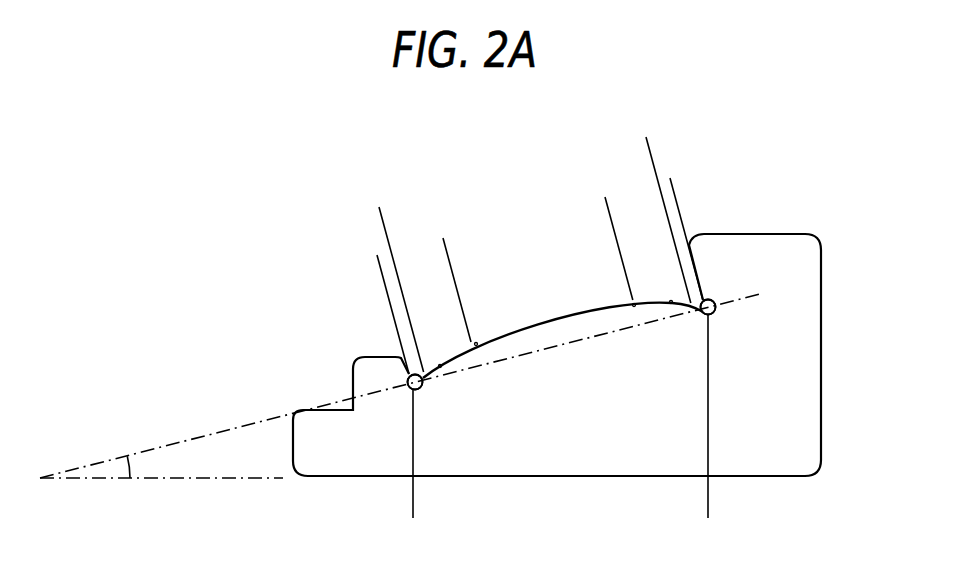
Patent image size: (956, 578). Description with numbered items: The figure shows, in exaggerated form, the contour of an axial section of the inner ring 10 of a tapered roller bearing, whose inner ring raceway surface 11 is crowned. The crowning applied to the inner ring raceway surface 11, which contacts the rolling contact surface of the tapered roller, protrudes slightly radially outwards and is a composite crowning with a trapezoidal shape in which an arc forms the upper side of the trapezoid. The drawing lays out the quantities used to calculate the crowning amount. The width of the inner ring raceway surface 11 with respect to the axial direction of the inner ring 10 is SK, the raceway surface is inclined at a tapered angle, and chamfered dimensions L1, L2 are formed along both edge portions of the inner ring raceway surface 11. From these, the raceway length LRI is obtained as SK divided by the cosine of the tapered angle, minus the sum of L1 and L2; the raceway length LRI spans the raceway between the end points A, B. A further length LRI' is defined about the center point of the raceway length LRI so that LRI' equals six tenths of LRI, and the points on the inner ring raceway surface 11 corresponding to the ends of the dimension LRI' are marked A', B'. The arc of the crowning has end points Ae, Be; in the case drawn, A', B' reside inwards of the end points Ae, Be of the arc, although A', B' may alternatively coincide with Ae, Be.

The inner ring 10 is at (812, 358).
The inner ring raceway surface 11 is at (549, 314).
The width of the inner ring raceway surface SK is at (701, 507).
The raceway length LRI is at (535, 254).
The length LRI' is at (538, 267).
The chamfered dimension L1 is at (427, 253).
The chamfered dimension L2 is at (630, 198).
The end point of the raceway length A is at (423, 417).
The end point of the arc Ae is at (442, 363).
The point corresponding to an end of LRI' A' is at (480, 385).
The end point of the raceway length B is at (700, 345).
The end point of the arc Be is at (670, 300).
The point corresponding to an end of LRI' B' is at (638, 345).